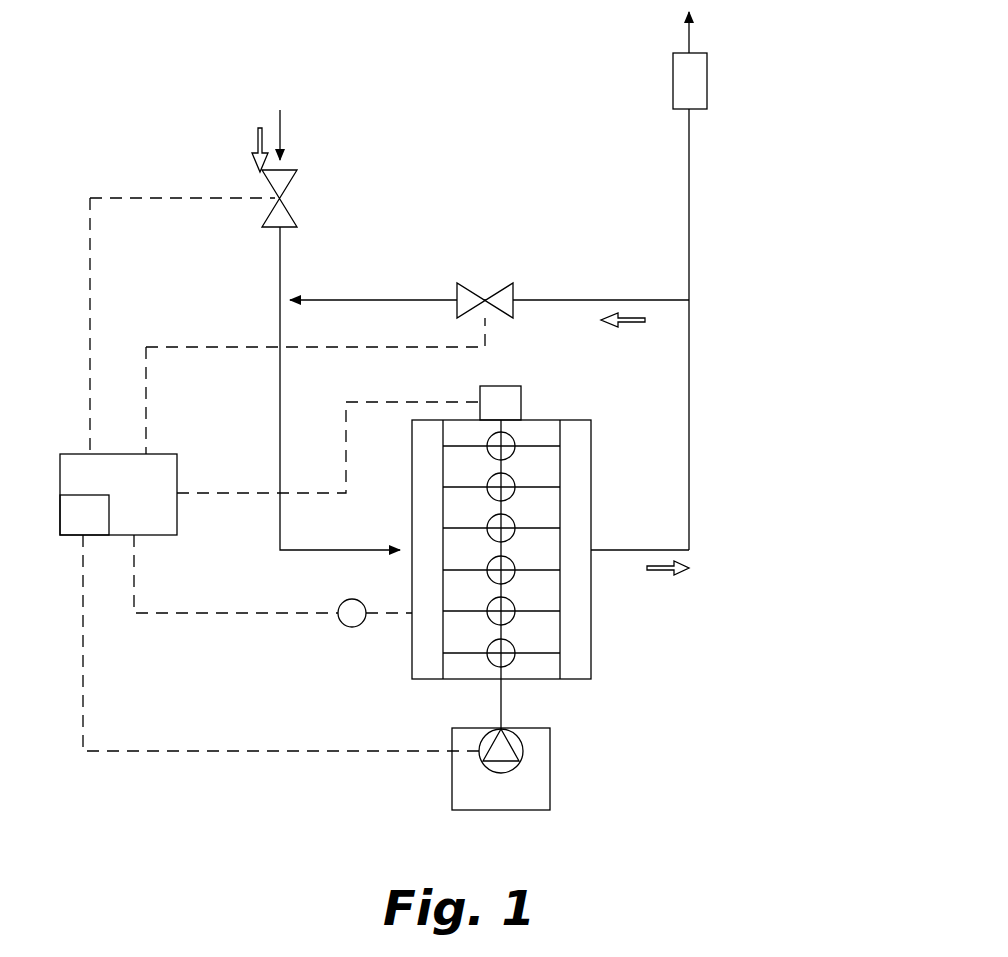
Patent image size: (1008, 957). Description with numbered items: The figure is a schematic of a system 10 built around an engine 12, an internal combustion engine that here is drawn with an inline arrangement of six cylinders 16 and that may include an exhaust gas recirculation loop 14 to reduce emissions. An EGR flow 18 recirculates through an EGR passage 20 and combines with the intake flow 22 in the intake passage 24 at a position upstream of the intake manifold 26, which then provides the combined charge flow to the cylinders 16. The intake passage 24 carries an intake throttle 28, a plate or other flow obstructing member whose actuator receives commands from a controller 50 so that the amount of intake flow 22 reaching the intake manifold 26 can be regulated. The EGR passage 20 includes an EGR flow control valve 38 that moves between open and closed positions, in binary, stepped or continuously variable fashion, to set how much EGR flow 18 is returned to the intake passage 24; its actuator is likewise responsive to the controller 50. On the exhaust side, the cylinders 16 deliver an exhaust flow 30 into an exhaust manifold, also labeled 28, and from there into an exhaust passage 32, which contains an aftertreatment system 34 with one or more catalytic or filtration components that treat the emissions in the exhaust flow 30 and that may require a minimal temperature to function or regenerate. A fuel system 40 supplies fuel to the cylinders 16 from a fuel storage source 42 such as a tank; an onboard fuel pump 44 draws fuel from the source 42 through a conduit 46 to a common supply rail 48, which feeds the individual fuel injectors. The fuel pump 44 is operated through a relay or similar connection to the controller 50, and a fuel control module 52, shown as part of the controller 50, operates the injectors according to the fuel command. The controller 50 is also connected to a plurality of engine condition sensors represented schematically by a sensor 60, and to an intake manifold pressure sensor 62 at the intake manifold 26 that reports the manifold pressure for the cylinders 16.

The system 10 is at (782, 570).
The engine 12 is at (573, 420).
The exhaust gas recirculation system or loop 14 is at (604, 273).
The cylinders 16 is at (490, 435).
The EGR flow 18 is at (628, 323).
The EGR passage 20 is at (393, 300).
The intake flow 22 is at (260, 138).
The intake passage 24 is at (280, 267).
The intake manifold 26 is at (419, 662).
The intake throttle 28 is at (580, 668).
The exhaust flow 30 is at (657, 572).
The exhaust passage 32 is at (689, 400).
The aftertreatment system 34 is at (707, 83).
The EGR flow control valve 38 is at (490, 290).
The fuel system 40 is at (533, 783).
The fuel storage source 42 is at (550, 795).
The fuel pump 44 is at (487, 765).
The conduit 46 is at (501, 698).
The common supply rail 48 is at (493, 632).
The controller 50 is at (148, 508).
The fuel control module 52 is at (98, 530).
The engine condition sensor 60 is at (502, 386).
The intake manifold pressure sensor 62 is at (341, 602).